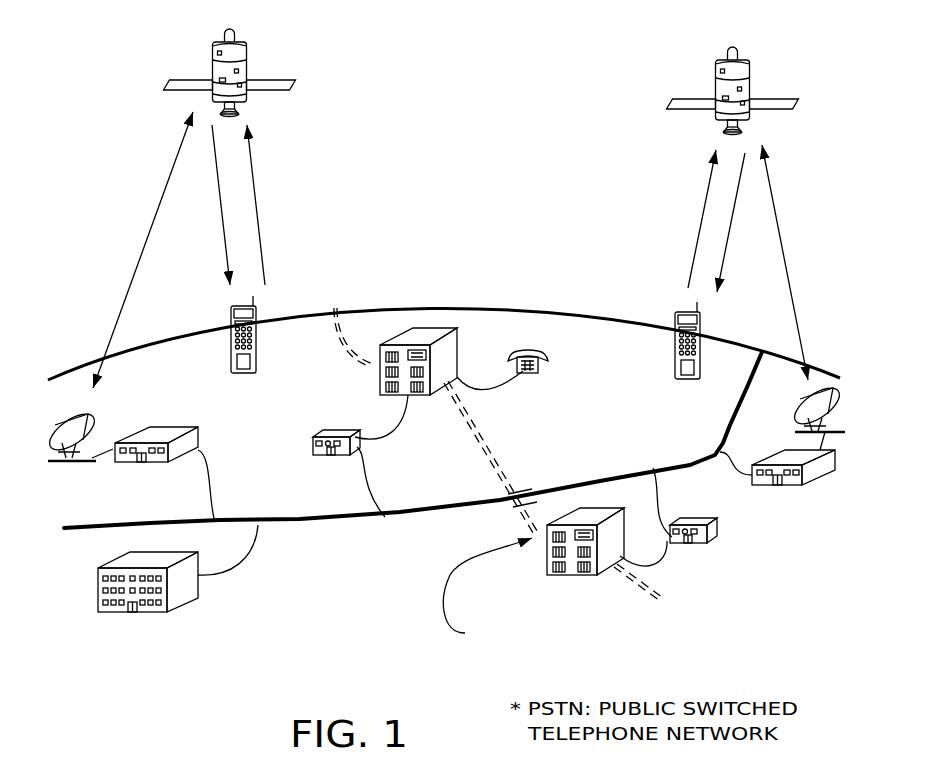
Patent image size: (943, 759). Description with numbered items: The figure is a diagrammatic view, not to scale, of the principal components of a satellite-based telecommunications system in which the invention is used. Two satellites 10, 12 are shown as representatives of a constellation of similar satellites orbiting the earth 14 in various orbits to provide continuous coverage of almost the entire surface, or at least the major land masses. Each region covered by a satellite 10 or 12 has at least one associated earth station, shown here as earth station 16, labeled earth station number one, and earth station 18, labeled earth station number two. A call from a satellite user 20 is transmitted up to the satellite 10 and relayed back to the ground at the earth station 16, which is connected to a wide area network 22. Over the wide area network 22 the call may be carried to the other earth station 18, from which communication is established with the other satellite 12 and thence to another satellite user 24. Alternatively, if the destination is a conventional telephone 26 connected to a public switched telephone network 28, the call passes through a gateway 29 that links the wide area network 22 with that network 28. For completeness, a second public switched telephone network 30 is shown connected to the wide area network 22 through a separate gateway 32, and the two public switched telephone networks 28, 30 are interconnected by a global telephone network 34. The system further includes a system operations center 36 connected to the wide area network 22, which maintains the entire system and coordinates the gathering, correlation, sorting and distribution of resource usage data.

The satellite 10 is at (247, 46).
The satellite 12 is at (757, 66).
The earth 14 is at (567, 308).
The earth station 16 is at (104, 432).
The earth station 18 is at (840, 478).
The satellite user 20 is at (232, 307).
The wide area network 22 is at (295, 527).
The satellite user 24 is at (677, 313).
The telephone 26 is at (548, 357).
The public switched telephone network 28 is at (422, 330).
The gateway 29 is at (330, 432).
The second PSTN 30 is at (600, 513).
The gateway 32 is at (690, 518).
The global telephone network 34 is at (482, 423).
The system operations center 36 is at (187, 601).